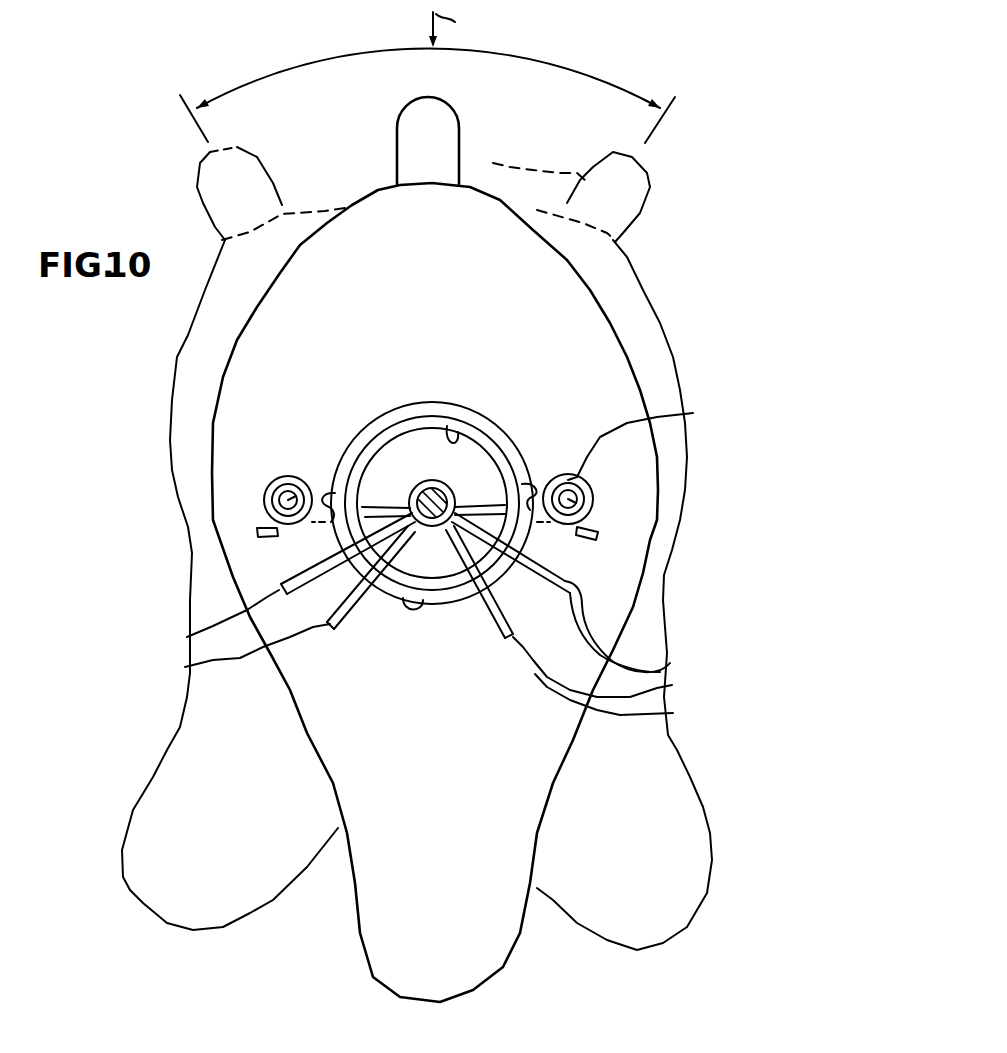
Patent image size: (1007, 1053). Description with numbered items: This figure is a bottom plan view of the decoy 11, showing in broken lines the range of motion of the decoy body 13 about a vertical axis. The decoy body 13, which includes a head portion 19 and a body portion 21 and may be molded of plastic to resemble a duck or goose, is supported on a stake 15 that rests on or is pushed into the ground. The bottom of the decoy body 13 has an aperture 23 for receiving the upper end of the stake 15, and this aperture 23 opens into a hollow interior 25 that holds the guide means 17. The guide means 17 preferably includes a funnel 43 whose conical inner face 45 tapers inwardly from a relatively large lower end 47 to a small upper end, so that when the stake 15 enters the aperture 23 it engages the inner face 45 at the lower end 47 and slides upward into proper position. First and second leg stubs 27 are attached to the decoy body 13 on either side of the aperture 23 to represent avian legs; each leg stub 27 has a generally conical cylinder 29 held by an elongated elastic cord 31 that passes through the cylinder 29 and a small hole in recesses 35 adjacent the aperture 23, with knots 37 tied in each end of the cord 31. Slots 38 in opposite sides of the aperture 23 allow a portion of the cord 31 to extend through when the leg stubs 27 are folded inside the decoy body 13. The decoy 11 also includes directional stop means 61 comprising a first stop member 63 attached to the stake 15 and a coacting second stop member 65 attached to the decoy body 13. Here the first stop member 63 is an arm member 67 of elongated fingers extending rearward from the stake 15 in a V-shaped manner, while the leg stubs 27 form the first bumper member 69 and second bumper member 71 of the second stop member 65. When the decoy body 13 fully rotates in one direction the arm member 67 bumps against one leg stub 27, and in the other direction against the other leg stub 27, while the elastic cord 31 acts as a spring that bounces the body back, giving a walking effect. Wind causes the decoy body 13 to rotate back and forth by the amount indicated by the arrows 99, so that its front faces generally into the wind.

The decoy 11 is at (722, 106).
The decoy body 13 is at (313, 882).
The stake 15 is at (528, 488).
The guide means 17 is at (396, 592).
The head portion 19 is at (458, 157).
The body portion 21 is at (711, 649).
The aperture 23 is at (292, 632).
The hollow interior 25 is at (176, 714).
The leg stubs 27 is at (243, 506).
The conical cylinder 29 is at (429, 470).
The elastic cord 31 is at (163, 498).
The recesses 35 is at (431, 450).
The knots 37 is at (428, 534).
The slots 38 is at (439, 517).
The funnel 43 is at (718, 359).
The inner face 45 is at (515, 458).
The lower end 47 is at (327, 472).
The directional stop means 61 is at (619, 699).
The first stop member 63 is at (178, 686).
The second stop member 65 is at (176, 581).
The arm member 67 is at (680, 667).
The first bumper member 69 is at (279, 560).
The second bumper member 71 is at (622, 610).
The arrows 99 is at (614, 82).